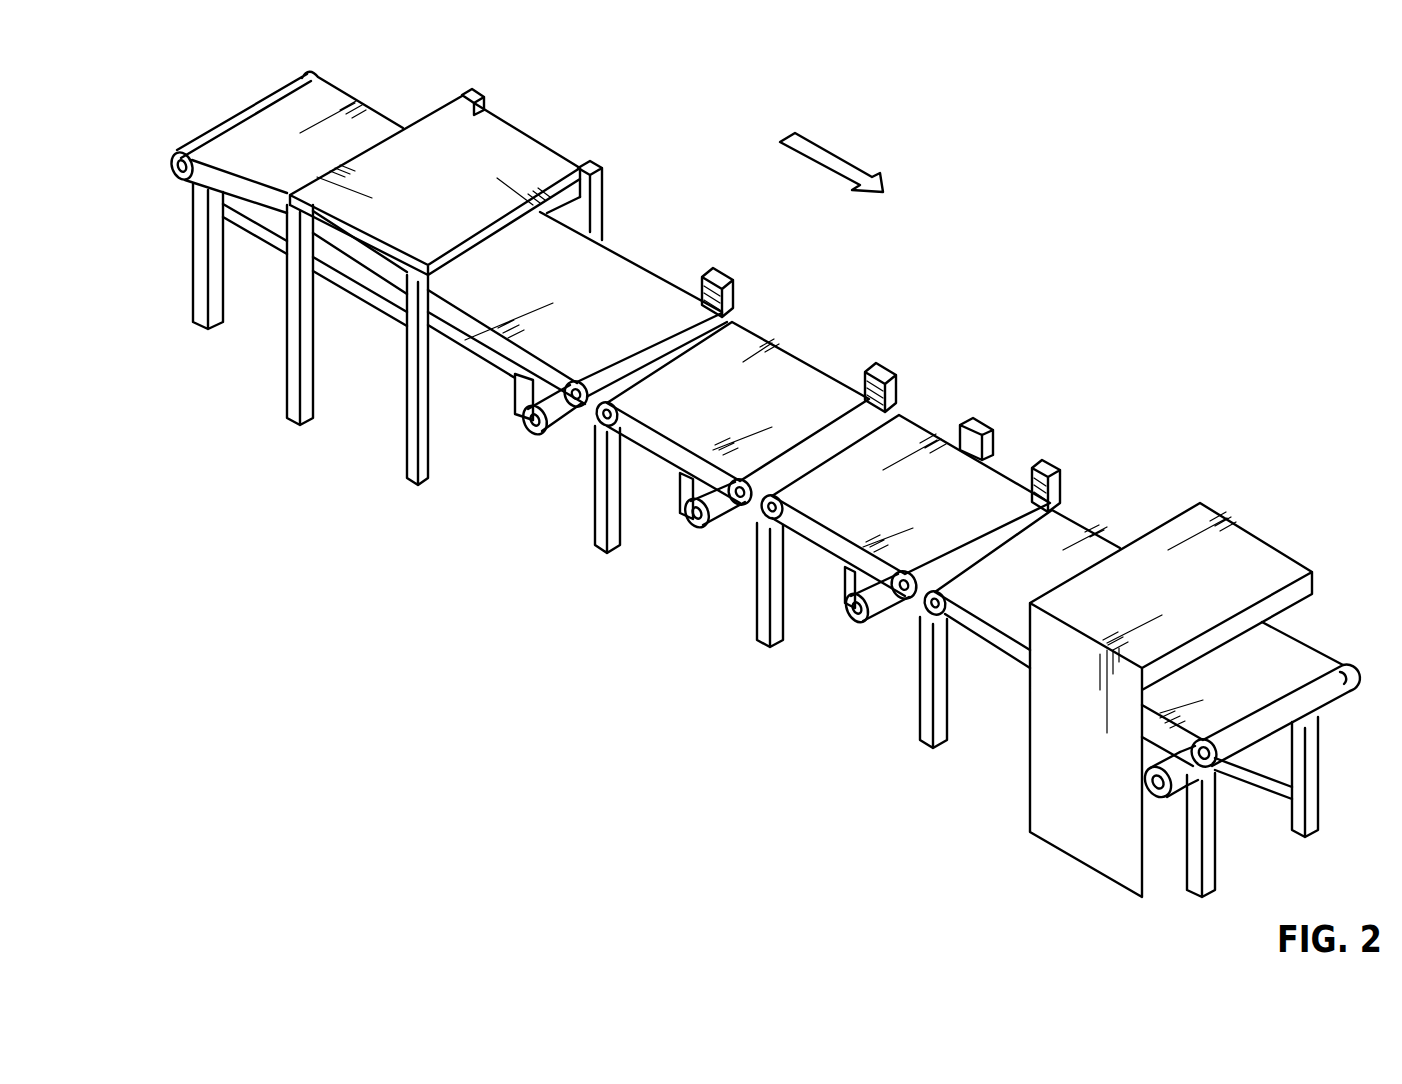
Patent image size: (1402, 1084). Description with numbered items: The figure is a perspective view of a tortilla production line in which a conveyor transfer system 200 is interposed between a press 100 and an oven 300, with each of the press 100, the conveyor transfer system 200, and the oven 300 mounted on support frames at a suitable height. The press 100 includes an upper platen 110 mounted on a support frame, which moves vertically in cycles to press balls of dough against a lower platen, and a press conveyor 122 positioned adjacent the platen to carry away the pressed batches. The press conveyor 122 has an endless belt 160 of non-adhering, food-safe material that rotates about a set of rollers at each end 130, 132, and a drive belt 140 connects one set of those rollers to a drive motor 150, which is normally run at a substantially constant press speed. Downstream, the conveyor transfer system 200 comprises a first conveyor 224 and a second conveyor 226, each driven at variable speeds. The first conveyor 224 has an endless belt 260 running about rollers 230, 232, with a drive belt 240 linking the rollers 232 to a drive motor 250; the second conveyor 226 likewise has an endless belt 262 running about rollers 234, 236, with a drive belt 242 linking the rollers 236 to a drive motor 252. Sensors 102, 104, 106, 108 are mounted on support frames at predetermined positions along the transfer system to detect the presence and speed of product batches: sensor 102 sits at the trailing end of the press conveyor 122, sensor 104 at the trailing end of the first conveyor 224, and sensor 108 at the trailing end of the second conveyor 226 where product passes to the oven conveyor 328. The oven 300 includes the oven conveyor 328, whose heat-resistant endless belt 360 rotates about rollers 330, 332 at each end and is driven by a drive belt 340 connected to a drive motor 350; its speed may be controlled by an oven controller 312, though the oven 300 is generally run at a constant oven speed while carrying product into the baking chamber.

The press 100 is at (536, 88).
The sensor 102 is at (720, 273).
The sensor 104 is at (887, 372).
The sensor 106 is at (975, 418).
The sensor 108 is at (1046, 462).
The upper platen 110 is at (470, 196).
The press conveyor 122 is at (580, 296).
The rollers 130 is at (170, 178).
The rollers 132 is at (533, 421).
The drive belt 140 is at (582, 430).
The drive motor 150 is at (562, 426).
The endless belt 160 is at (497, 330).
The conveyor transfer system 200 is at (940, 224).
The first conveyor 224 is at (763, 414).
The second conveyor 226 is at (927, 514).
The rollers 230 is at (603, 430).
The rollers 232 is at (722, 498).
The rollers 234 is at (733, 507).
The rollers 236 is at (872, 598).
The drive belt 240 is at (766, 520).
The drive belt 242 is at (928, 598).
The drive motor 250 is at (703, 527).
The drive motor 252 is at (882, 608).
The endless belt 260 is at (682, 436).
The endless belt 262 is at (837, 533).
The oven 300 is at (1235, 461).
The oven controller 312 is at (1200, 601).
The oven conveyor 328 is at (1055, 586).
The rollers 330 is at (945, 617).
The rollers 332 is at (1192, 763).
The drive belt 340 is at (1145, 758).
The drive motor 350 is at (1170, 795).
The endless belt 360 is at (1003, 628).